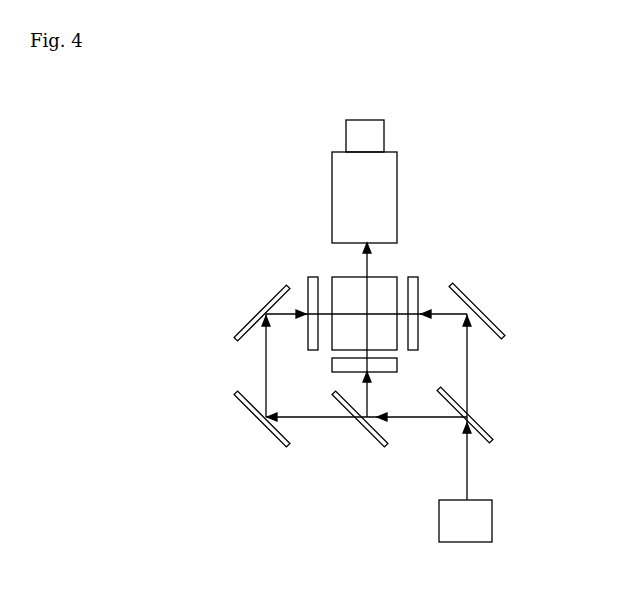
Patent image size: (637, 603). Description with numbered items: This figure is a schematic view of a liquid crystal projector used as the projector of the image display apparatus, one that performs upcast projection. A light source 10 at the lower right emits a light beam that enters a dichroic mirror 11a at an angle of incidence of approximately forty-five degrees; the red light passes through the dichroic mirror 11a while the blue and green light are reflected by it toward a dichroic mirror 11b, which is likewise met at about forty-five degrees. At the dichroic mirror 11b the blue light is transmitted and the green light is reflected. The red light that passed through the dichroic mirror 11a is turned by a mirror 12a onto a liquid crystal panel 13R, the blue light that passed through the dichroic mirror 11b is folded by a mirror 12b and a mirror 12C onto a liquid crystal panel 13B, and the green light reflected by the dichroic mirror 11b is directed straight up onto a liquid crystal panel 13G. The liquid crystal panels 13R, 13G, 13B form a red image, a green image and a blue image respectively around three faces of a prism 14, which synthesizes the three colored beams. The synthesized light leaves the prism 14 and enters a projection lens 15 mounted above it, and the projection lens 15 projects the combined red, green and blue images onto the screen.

The light source 10 is at (492, 522).
The dichroic mirror 11a is at (487, 412).
The dichroic mirror 11b is at (372, 442).
The mirror 12a is at (482, 312).
The mirror 12b is at (272, 440).
The mirror 12C is at (245, 322).
The liquid crystal panel 13B is at (310, 277).
The liquid crystal panel 13G is at (397, 365).
The liquid crystal panel 13R is at (417, 277).
The prism 14 is at (400, 275).
The projection lens 15 is at (397, 152).